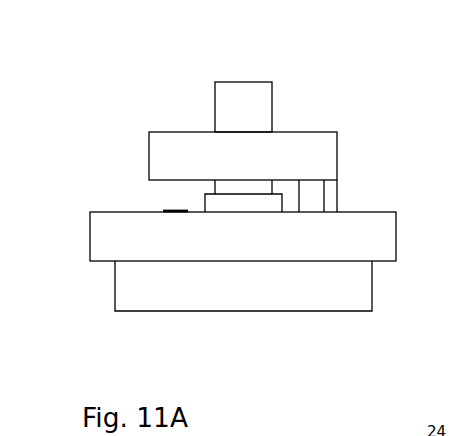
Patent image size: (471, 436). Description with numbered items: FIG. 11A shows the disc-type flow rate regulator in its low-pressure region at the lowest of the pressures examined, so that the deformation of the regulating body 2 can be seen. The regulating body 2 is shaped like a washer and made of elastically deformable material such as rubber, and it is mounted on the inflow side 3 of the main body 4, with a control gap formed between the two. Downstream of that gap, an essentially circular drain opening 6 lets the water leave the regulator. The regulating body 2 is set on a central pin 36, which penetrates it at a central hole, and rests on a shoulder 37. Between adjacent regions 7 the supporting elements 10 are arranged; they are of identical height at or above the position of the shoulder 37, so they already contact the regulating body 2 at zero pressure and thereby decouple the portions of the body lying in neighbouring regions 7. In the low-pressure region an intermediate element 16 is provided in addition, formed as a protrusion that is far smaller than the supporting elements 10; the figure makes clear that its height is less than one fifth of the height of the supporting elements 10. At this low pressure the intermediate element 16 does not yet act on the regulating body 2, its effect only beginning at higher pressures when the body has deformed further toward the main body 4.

The regulating body 2 is at (182, 152).
The inflow side 3 is at (188, 98).
The main body 4 is at (130, 231).
The drain opening 6 is at (233, 321).
The regions 7 is at (258, 231).
The supporting element 10 is at (315, 195).
The intermediate element 16 is at (163, 211).
The pin 36 is at (253, 190).
The shoulder 37 is at (253, 103).